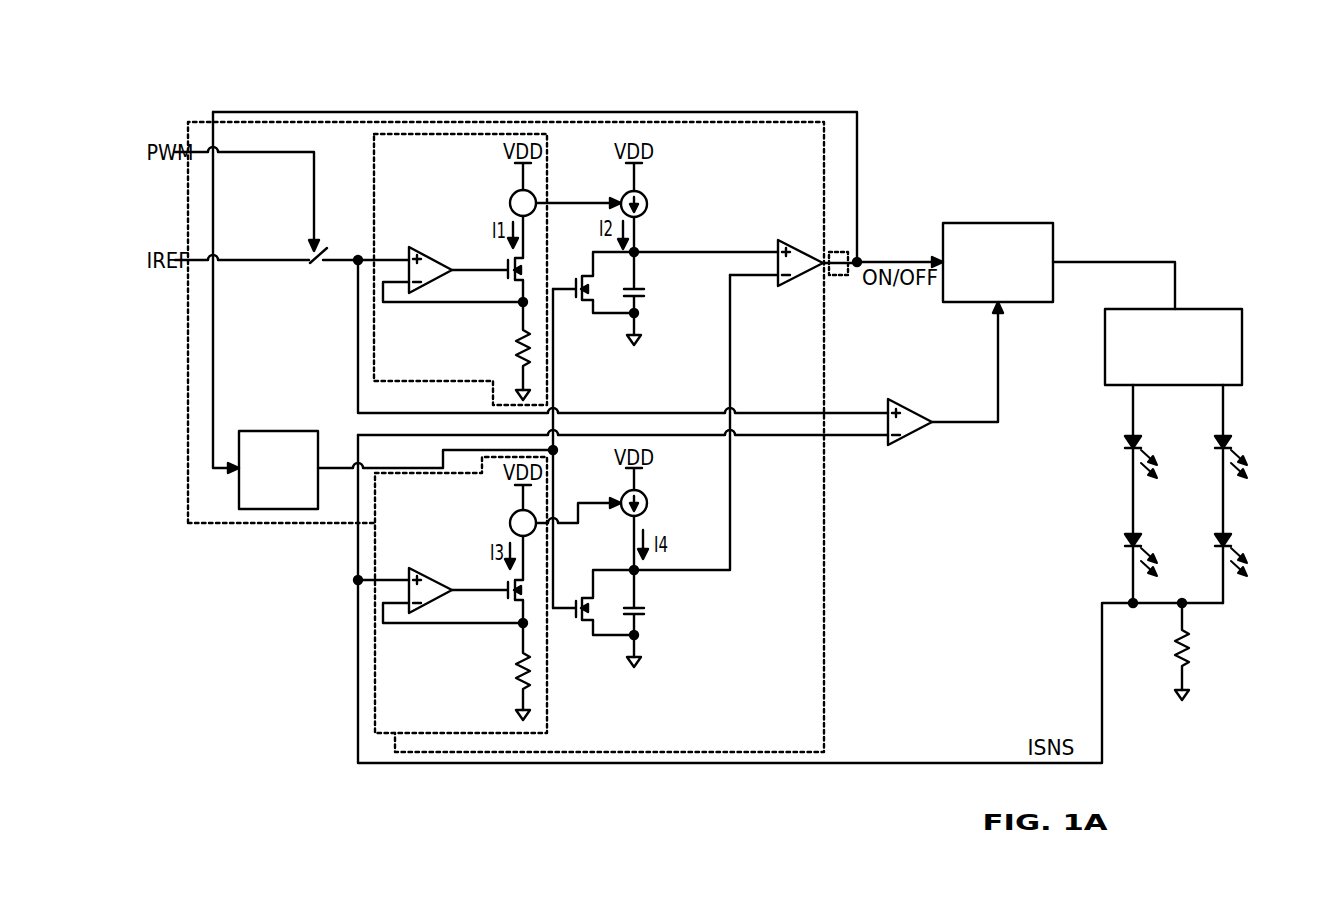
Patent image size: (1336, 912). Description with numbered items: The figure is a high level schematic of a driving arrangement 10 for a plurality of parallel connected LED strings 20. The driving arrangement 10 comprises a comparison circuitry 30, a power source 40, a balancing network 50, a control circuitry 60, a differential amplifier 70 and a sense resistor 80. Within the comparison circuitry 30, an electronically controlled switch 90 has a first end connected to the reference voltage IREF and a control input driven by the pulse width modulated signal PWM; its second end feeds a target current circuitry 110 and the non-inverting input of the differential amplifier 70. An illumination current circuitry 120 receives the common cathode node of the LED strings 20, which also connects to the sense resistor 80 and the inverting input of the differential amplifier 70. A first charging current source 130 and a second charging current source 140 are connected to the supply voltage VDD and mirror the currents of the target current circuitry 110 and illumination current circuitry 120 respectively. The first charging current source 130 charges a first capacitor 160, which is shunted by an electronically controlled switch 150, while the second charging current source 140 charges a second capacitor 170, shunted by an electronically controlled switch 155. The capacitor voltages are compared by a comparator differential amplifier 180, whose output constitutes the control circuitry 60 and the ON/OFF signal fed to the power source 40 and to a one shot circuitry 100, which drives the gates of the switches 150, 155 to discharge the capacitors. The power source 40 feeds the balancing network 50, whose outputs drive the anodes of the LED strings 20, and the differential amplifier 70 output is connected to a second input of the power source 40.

The driving arrangement 10 is at (1153, 164).
The LED strings 20 is at (1133, 405).
The comparison circuitry 30 is at (188, 460).
The power source 40 is at (1053, 236).
The balancing network 50 is at (1242, 322).
The control circuitry 60 is at (840, 277).
The differential amplifier 70 is at (902, 399).
The sense resistor 80 is at (1189, 656).
The electronically controlled switch 90 is at (315, 266).
The one shot circuitry 100 is at (278, 431).
The target current circuitry 110 is at (550, 168).
The illumination current circuitry 120 is at (548, 702).
The first charging current source 130 is at (648, 206).
The second charging current source 140 is at (648, 511).
The electronically controlled switch 150 is at (586, 305).
The electronically controlled switch 155 is at (586, 596).
The first capacitor 160 is at (646, 290).
The second capacitor 170 is at (646, 609).
The comparator differential amplifier 180 is at (797, 240).